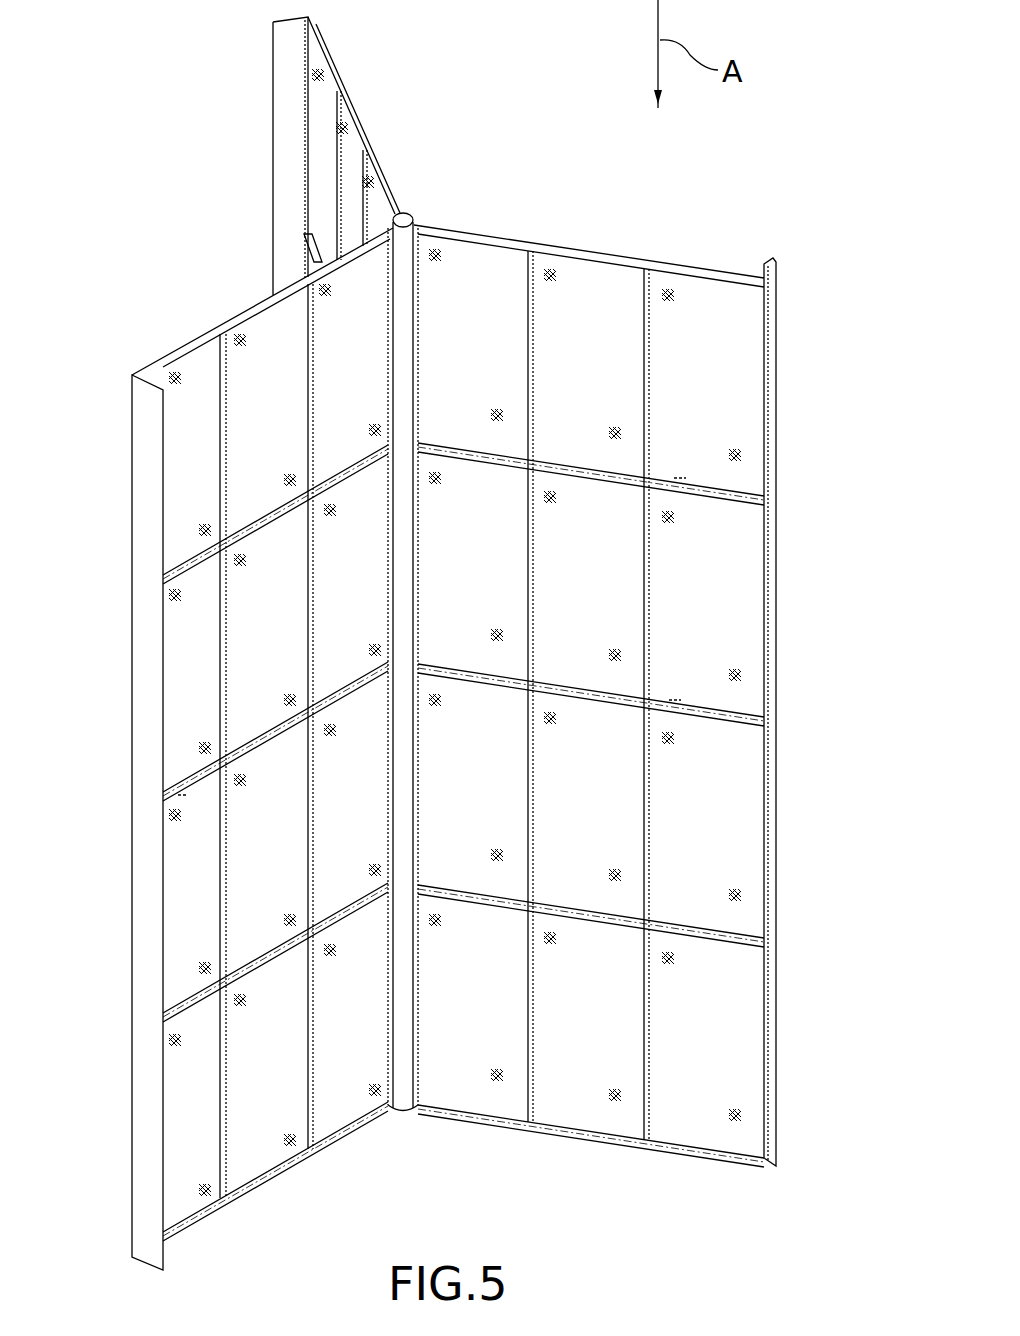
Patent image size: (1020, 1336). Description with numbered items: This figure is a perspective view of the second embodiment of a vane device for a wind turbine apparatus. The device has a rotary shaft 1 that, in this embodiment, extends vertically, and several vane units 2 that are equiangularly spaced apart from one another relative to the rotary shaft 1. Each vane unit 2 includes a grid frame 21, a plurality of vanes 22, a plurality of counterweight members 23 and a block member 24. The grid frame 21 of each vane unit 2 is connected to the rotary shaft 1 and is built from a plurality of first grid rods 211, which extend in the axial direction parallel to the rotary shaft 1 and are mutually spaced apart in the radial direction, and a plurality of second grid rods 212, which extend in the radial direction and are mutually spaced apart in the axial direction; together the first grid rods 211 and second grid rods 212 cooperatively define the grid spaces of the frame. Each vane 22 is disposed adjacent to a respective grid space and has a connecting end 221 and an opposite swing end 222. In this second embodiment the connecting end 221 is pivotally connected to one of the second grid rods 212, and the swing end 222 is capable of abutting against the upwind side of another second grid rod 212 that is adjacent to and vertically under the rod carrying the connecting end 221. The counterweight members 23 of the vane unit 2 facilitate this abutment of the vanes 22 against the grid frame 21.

The rotary shaft 1 is at (403, 273).
The vane unit 2 is at (336, 30).
The grid frame 21 is at (607, 236).
The vane 22 is at (747, 608).
The counterweight member 23 is at (680, 478).
The block member 24 is at (288, 68).
The first grid rod 211 is at (648, 345).
The second grid rod 212 is at (598, 478).
The connecting end 221 is at (713, 503).
The swing end 222 is at (733, 705).